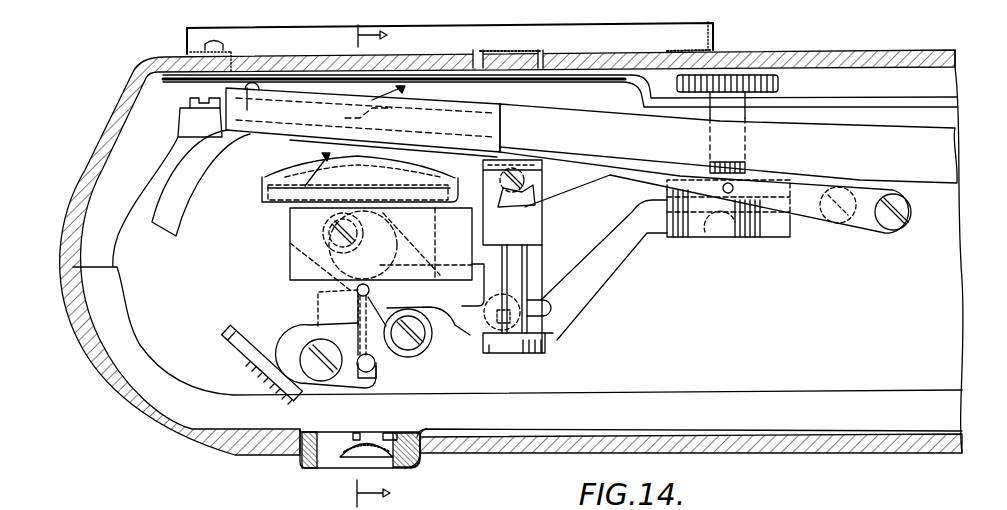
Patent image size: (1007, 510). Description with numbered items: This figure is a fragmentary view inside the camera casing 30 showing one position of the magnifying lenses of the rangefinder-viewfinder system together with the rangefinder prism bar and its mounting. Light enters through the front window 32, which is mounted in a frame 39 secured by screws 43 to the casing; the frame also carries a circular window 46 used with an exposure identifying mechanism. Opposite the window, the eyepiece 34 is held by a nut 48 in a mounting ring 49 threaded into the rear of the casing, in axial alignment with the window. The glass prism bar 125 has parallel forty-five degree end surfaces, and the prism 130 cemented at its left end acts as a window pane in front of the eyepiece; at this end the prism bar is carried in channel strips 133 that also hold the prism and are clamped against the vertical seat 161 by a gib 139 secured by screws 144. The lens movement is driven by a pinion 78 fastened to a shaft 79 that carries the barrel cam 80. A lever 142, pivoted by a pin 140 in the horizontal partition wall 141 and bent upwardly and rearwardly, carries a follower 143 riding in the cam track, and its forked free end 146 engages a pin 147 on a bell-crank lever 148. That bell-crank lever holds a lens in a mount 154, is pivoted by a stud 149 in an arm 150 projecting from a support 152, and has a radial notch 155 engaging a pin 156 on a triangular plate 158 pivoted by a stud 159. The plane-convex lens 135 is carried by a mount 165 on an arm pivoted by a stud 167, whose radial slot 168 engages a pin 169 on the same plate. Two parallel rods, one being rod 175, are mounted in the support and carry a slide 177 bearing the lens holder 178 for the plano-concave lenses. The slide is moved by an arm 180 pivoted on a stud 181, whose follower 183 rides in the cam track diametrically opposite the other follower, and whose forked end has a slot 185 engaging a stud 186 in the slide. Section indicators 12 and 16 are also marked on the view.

The section line 12 is at (386, 267).
The section line 16 is at (363, 133).
The camera casing 30 is at (765, 445).
The window 32 is at (433, 51).
The eyepiece 34 is at (348, 460).
The frame 39 is at (720, 33).
The screws 43 is at (222, 47).
The circular window 46 is at (567, 57).
The nut 48 is at (388, 437).
The mounting ring 49 is at (418, 462).
The pinion 78 is at (780, 85).
The shaft 79 is at (710, 122).
The barrel cam 80 is at (760, 235).
The prism bar 125 is at (937, 152).
The prism 130 is at (363, 122).
The channel strips 133 is at (487, 121).
The plano-convex lens 135 is at (303, 185).
The gib 139 is at (253, 101).
The pin 140 is at (835, 220).
The partition wall 141 is at (792, 382).
The lever 142 is at (604, 270).
The follower 143 is at (706, 242).
The screws 144 is at (192, 98).
The forked free end 146 is at (557, 332).
The pin 147 is at (482, 325).
The bell-crank lever 148 is at (437, 320).
The stud 149 is at (330, 236).
The arm 150 is at (448, 280).
The support 152 is at (537, 253).
The mount 154 is at (250, 367).
The notch 155 is at (360, 313).
The pin 156 is at (357, 290).
The triangular shaped plate 158 is at (397, 357).
The stud 159 is at (397, 342).
The seat 161 is at (211, 133).
The mount 165 is at (267, 205).
The stud 167 is at (318, 377).
The slot 168 is at (348, 390).
The pin 169 is at (373, 380).
The rod 175 is at (532, 270).
The slide 177 is at (543, 222).
The lens holder 178 is at (293, 253).
The arm 180 is at (580, 176).
The stud 181 is at (911, 212).
The follower 183 is at (734, 186).
The slot 185 is at (523, 204).
The stud 186 is at (507, 196).